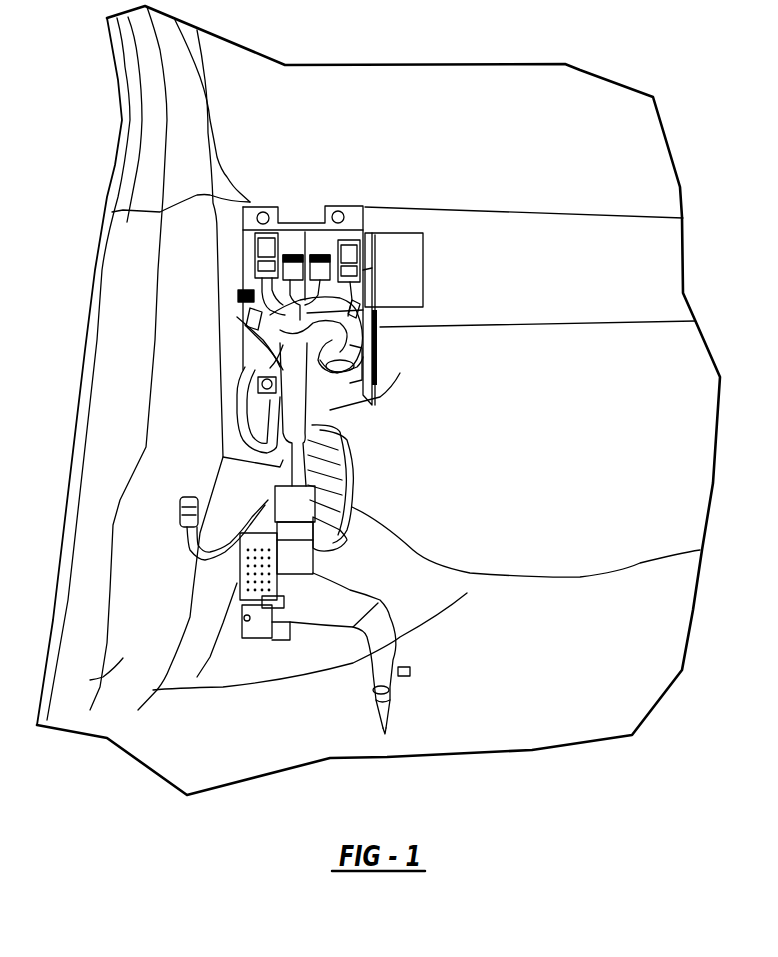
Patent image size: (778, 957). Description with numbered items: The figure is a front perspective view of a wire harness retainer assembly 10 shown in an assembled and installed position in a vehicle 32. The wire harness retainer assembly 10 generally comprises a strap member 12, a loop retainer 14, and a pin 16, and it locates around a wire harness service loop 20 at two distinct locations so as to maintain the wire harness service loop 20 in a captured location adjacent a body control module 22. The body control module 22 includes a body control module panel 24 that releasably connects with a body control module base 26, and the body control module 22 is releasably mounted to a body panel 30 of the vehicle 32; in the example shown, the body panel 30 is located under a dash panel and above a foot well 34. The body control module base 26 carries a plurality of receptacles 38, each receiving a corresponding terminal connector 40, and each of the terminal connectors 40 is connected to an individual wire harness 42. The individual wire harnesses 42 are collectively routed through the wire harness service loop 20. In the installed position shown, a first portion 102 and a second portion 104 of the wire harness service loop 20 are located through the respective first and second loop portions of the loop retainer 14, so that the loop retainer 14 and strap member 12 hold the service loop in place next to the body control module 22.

The wire harness retainer assembly 10 is at (392, 387).
The strap member 12 is at (243, 279).
The loop retainer 14 is at (352, 380).
The pin 16 is at (245, 295).
The wire harness service loop 20 is at (350, 337).
The body control module 22 is at (378, 196).
The body control module panel 24 is at (318, 237).
The body control module base 26 is at (373, 257).
The body panel 30 is at (233, 222).
The vehicle 32 is at (560, 102).
The foot well 34 is at (554, 702).
The receptacles 38 is at (253, 204).
The terminal connectors 40 is at (287, 250).
The individual wire harnesses 42 is at (254, 312).
The first portion of the wire harness service loop 102 is at (350, 357).
The second portion of the wire harness service loop 104 is at (297, 370).